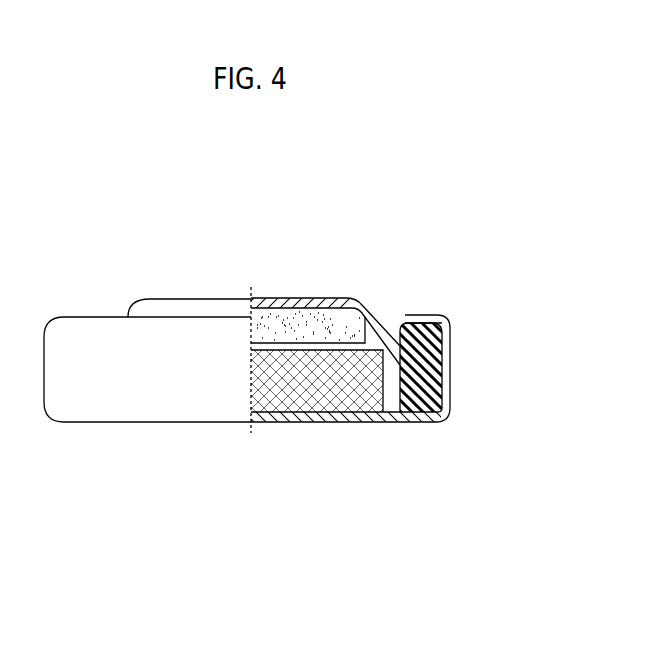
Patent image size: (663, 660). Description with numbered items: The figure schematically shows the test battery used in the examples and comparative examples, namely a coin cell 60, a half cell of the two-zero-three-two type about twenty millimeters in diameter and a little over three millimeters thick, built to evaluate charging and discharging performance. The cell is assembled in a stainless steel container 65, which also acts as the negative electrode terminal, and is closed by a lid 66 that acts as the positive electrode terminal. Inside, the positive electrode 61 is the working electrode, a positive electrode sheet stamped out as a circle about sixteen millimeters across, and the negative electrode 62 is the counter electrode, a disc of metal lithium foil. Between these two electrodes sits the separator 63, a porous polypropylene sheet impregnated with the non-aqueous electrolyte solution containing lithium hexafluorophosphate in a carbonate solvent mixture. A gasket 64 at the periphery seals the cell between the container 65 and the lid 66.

The coin cell 60 is at (442, 271).
The positive electrode 61 is at (307, 300).
The negative electrode 62 is at (329, 410).
The separator 63 is at (332, 342).
The gasket 64 is at (452, 343).
The container 65 is at (178, 408).
The lid 66 is at (193, 297).